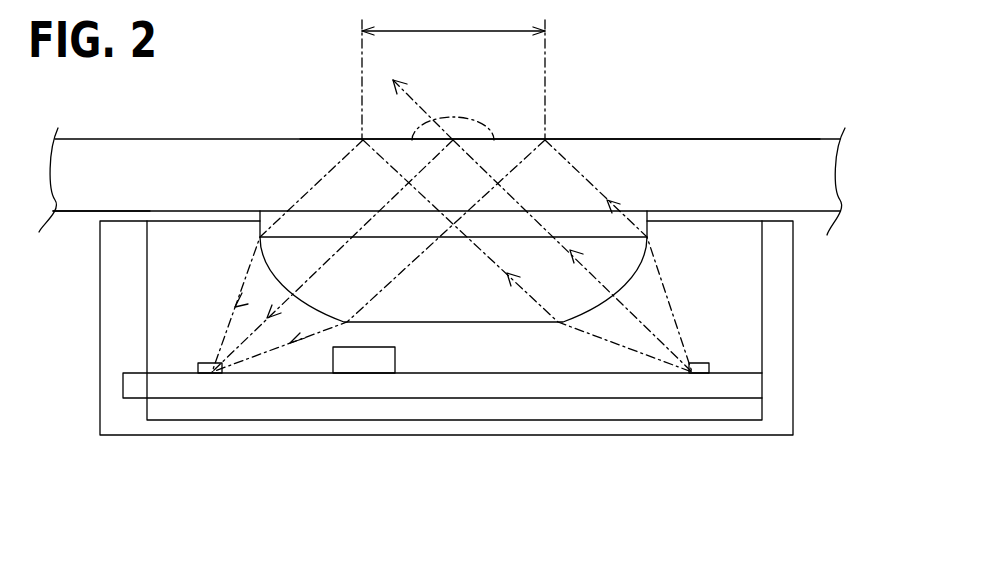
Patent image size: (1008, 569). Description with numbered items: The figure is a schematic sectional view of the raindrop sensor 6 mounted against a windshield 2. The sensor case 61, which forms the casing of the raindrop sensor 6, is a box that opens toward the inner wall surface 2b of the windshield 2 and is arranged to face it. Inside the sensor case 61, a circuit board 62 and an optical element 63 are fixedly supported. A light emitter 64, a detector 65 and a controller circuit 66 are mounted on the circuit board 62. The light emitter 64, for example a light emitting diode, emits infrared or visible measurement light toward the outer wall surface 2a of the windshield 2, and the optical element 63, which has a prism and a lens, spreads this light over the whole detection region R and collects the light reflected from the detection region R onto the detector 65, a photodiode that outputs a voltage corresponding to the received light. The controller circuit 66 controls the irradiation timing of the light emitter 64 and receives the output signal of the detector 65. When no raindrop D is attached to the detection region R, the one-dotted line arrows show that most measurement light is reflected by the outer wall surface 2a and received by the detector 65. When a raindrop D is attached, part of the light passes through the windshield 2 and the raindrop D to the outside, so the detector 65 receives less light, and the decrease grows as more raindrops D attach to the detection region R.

The windshield 2 is at (823, 177).
The outer wall surface 2a is at (805, 139).
The inner wall surface 2b is at (75, 211).
The raindrop sensor 6 is at (486, 369).
The sensor case 61 is at (783, 333).
The circuit board 62 is at (513, 388).
The optical element 63 is at (437, 307).
The light emitter 64 is at (705, 377).
The detector 65 is at (207, 373).
The controller circuit 66 is at (355, 363).
The detection region R is at (453, 70).
The raindrop D is at (464, 117).